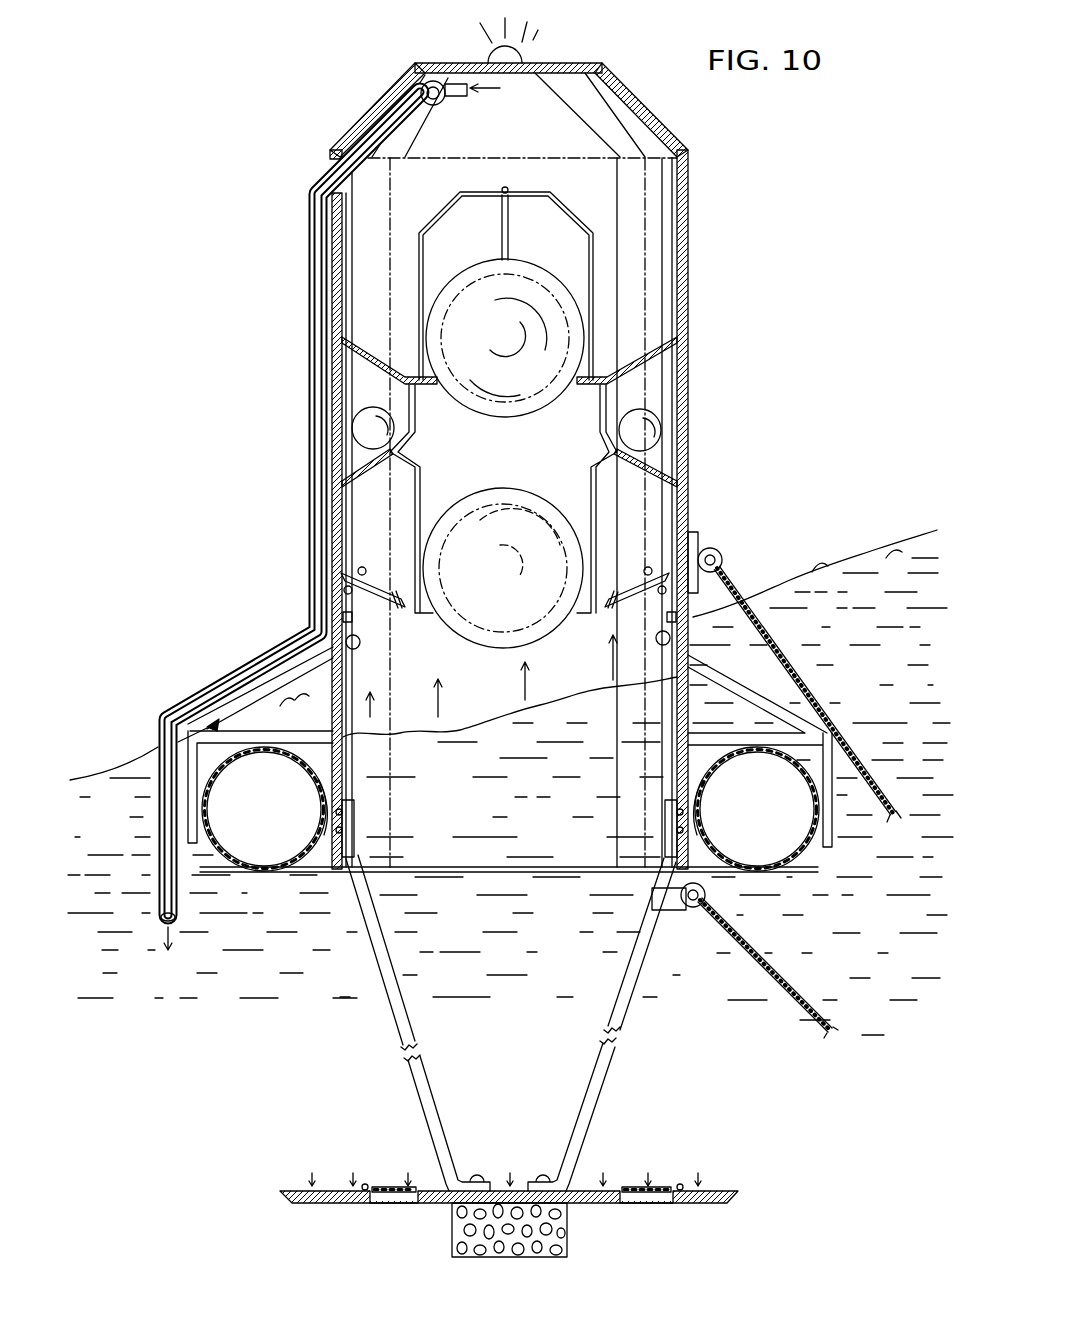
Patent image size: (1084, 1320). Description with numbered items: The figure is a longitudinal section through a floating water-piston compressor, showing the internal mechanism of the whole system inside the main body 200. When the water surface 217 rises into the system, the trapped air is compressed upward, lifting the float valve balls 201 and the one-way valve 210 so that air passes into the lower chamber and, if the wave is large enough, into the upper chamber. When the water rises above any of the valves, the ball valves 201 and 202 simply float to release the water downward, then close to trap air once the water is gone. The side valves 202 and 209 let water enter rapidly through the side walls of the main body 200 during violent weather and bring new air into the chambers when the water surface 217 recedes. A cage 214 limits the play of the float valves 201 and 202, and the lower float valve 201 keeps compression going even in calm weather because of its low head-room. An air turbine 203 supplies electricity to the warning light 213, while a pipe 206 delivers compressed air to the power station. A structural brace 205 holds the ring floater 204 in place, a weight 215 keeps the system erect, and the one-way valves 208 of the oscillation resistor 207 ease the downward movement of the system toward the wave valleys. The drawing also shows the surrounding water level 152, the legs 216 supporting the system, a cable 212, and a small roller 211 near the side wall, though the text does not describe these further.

The water surface 152 is at (825, 565).
The main body 200 is at (682, 260).
The float valve ball 201 is at (485, 496).
The side valve 202 is at (394, 440).
The air turbine 203 is at (445, 105).
The ring floater 204 is at (313, 777).
The structural brace 205 is at (242, 703).
The pipe 206 is at (312, 262).
The oscillation resistor 207 is at (713, 1192).
The one-way valve 208 is at (653, 1188).
The side valve 209 is at (346, 618).
The one-way valve 210 is at (378, 573).
The roller 211 is at (362, 650).
The cable 212 is at (896, 686).
The warning light 213 is at (515, 53).
The cage 214 is at (567, 214).
The weight 215 is at (560, 1240).
The support leg 216 is at (627, 970).
The water surface 217 is at (455, 732).